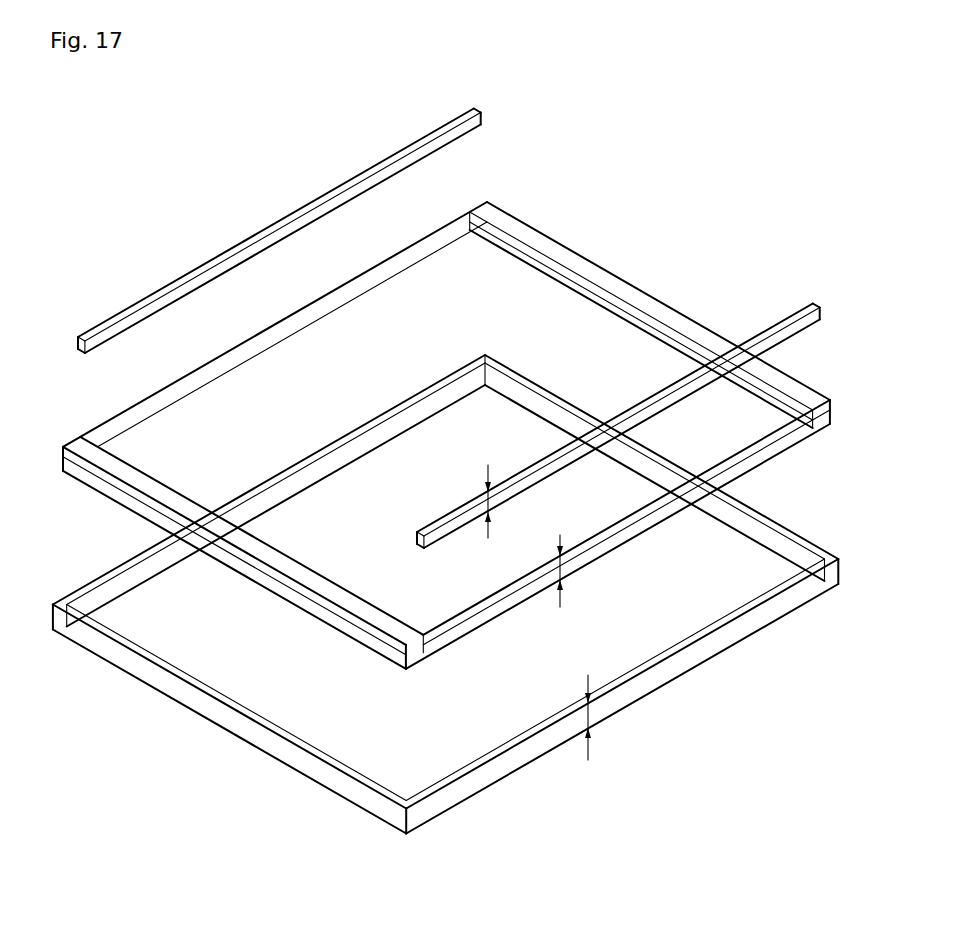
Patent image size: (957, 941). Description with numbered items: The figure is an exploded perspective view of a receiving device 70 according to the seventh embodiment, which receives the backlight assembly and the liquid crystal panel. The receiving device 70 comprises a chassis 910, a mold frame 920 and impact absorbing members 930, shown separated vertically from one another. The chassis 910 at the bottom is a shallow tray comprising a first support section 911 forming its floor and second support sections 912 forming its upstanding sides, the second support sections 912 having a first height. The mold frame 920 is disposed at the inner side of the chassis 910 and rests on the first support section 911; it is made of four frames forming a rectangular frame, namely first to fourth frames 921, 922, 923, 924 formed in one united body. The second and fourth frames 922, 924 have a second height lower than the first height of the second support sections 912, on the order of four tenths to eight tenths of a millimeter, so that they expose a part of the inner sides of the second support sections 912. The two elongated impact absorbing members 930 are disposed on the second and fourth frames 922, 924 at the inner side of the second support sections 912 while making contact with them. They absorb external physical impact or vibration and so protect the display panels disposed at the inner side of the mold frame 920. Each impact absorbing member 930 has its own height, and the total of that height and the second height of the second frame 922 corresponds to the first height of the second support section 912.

The receiving device 70 is at (160, 254).
The chassis 910 is at (128, 684).
The first support section 911 is at (262, 681).
The second support section 912 is at (290, 748).
The mold frame 920 is at (757, 272).
The first frame 921 is at (672, 318).
The second frame 922 is at (705, 470).
The third frame 923 is at (297, 562).
The fourth frame 924 is at (413, 258).
The impact absorbing member 930 is at (461, 112).